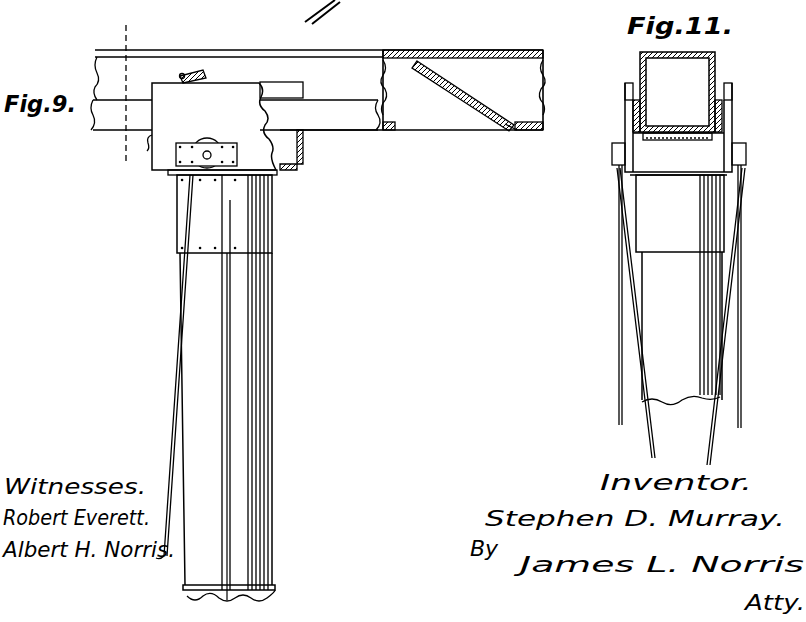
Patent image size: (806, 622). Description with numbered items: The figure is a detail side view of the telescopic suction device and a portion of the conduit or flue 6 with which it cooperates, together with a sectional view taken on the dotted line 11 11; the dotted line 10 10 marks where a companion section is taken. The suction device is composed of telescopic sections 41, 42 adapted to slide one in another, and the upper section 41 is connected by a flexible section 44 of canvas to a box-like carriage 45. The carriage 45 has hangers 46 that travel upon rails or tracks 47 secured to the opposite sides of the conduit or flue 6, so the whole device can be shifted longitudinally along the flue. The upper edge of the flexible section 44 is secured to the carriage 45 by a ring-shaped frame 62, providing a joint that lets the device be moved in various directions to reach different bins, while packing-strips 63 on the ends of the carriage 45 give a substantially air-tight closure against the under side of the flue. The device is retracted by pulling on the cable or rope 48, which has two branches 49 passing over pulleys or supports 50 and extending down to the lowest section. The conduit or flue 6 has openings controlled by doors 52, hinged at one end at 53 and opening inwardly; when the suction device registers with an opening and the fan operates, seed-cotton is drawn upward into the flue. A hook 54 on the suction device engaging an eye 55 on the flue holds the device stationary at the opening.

In FIG. 9, the conduit or flue 6 is at (463, 90).
In FIG. 11, the conduit or flue 6 is at (677, 92).
In FIG. 9, the section line 10 is at (240, 140).
In FIG. 9, the section line 11 is at (125, 95).
In FIG. 9, the upper telescopic section 41 is at (214, 388).
In FIG. 11, the upper telescopic section 41 is at (685, 334).
In FIG. 9, the telescopic section 42 is at (275, 589).
In FIG. 9, the flexible section 44 is at (272, 212).
In FIG. 11, the flexible section 44 is at (685, 310).
In FIG. 9, the box-like carriage 45 is at (214, 129).
In FIG. 11, the box-like carriage 45 is at (625, 119).
In FIG. 9, the hangers 46 is at (290, 98).
In FIG. 11, the hangers 46 is at (627, 83).
In FIG. 9, the rails or tracks 47 is at (345, 124).
In FIG. 11, the rails or tracks 47 is at (634, 110).
In FIG. 9, the cable or rope 48 is at (175, 318).
In FIG. 9, the cable branches 49 is at (226, 390).
In FIG. 11, the cable branches 49 is at (615, 335).
In FIG. 9, the pulleys or supports 50 is at (217, 146).
In FIG. 11, the pulleys or supports 50 is at (612, 143).
In FIG. 9, the doors 52 is at (457, 91).
In FIG. 9, the hinge 53 is at (509, 130).
In FIG. 9, the hook 54 is at (196, 70).
In FIG. 9, the eye 55 is at (180, 73).
In FIG. 11, the ring-shaped frame 62 is at (625, 177).
In FIG. 9, the packing-strips 63 is at (147, 140).
In FIG. 11, the packing-strips 63 is at (680, 140).